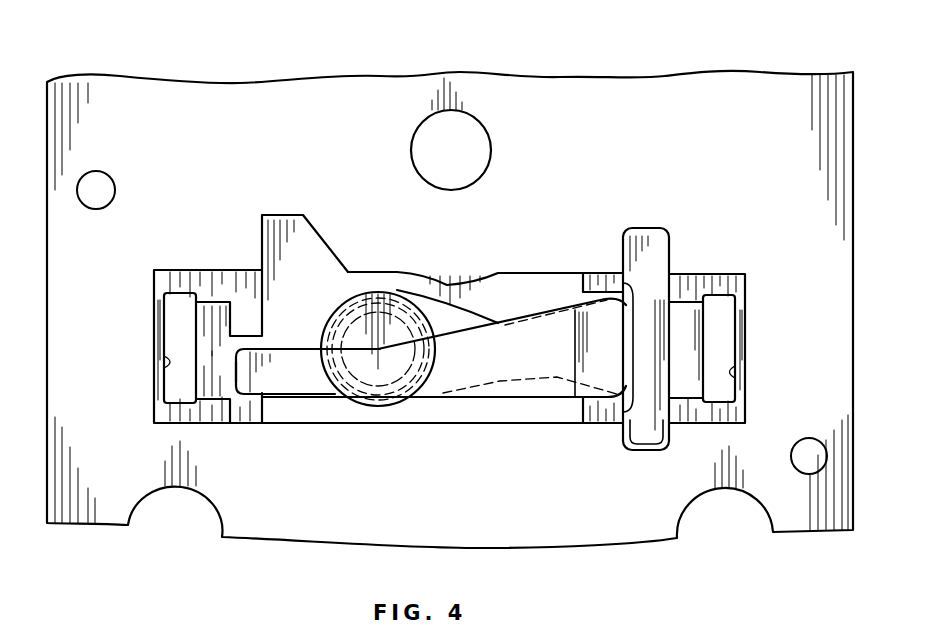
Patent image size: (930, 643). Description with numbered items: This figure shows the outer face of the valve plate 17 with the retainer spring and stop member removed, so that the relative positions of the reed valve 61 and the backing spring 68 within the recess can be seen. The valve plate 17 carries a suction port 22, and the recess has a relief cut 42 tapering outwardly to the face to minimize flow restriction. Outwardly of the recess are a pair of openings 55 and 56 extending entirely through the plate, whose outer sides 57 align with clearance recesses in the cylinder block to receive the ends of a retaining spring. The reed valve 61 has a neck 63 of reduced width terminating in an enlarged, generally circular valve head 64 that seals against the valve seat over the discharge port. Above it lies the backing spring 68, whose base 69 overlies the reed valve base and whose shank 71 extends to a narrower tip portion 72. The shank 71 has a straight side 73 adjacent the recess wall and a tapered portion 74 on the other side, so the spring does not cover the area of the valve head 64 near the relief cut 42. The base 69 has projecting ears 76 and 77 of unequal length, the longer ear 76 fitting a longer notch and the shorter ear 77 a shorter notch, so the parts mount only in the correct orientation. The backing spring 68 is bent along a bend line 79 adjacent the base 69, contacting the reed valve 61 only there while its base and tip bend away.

The valve plate 17 is at (643, 102).
The suction port 22 is at (487, 141).
The relief cut 42 is at (295, 247).
The opening 55 is at (178, 337).
The opening 56 is at (717, 350).
The outer sides 57 is at (165, 372).
The reed valve 61 is at (562, 367).
The neck 63 is at (469, 312).
The valve head 64 is at (395, 292).
The backing spring 68 is at (502, 370).
The base 69 is at (642, 342).
The shank 71 is at (458, 392).
The tip portion 72 is at (257, 383).
The straight side 73 is at (322, 398).
The tapered portion 74 is at (555, 308).
The ear 76 is at (652, 252).
The ear 77 is at (647, 423).
The bend line 79 is at (575, 350).